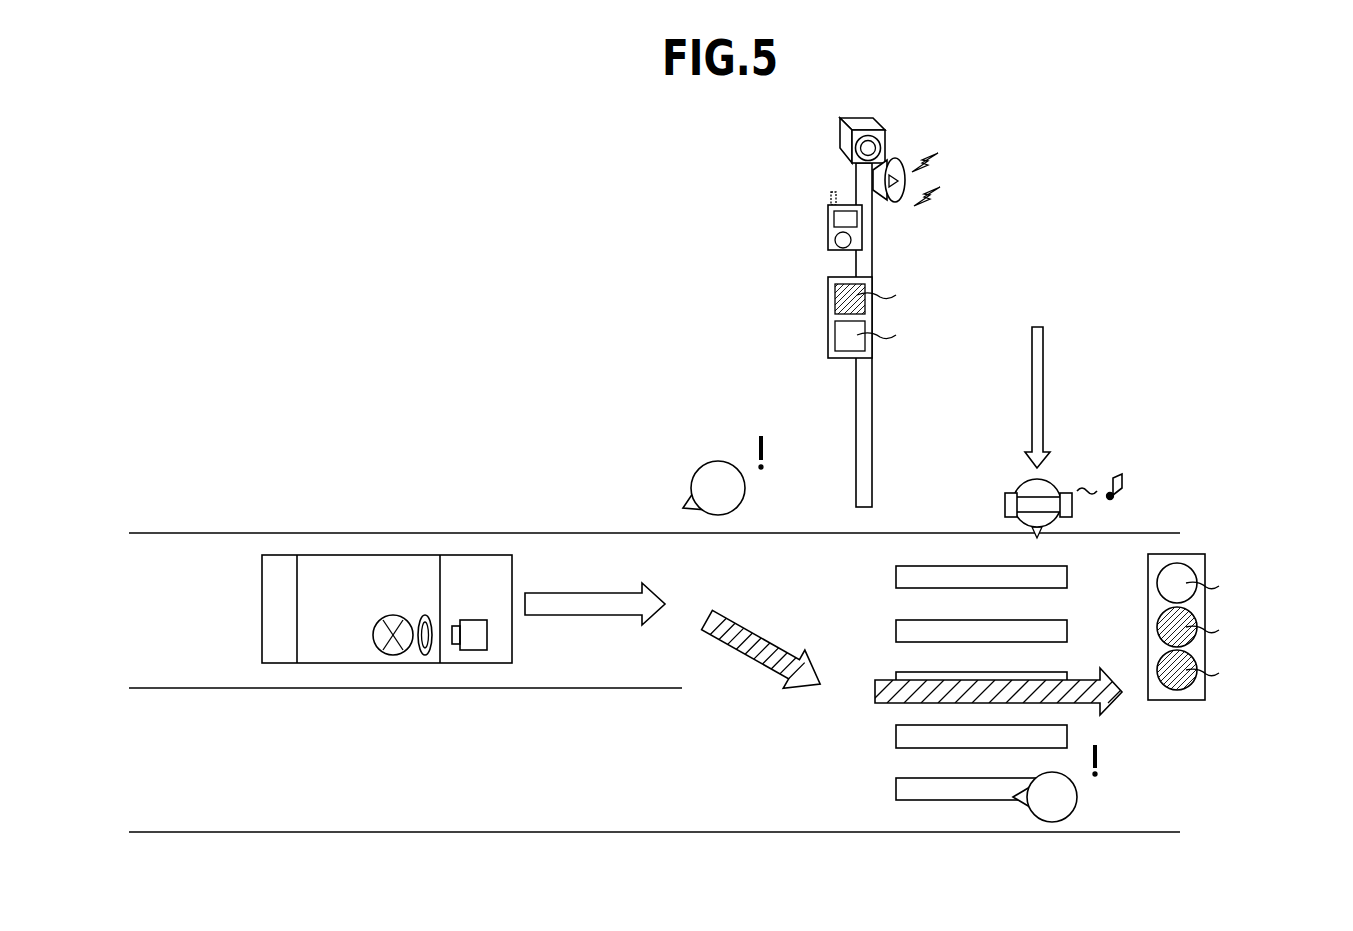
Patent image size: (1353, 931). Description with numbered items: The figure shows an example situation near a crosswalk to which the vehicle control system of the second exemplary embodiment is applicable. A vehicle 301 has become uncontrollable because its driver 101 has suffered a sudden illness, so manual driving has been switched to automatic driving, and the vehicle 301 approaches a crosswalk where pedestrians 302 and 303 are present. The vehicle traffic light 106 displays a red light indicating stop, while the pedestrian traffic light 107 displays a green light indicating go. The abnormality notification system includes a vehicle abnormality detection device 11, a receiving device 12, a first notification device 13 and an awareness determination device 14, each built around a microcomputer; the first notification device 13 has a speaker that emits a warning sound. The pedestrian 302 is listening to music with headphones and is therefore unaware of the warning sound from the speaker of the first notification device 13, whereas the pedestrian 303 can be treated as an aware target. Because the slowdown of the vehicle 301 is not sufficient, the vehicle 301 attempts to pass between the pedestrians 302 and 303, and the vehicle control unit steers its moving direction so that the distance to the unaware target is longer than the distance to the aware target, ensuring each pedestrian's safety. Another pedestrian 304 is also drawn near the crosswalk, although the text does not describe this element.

The awareness determination device 14 is at (860, 126).
The first notification device 13 is at (896, 158).
The receiving device 12 is at (828, 224).
The pedestrian traffic light 107 is at (828, 318).
The pedestrian 304 is at (745, 488).
The pedestrian 302 is at (1010, 493).
The vehicle 301 is at (428, 576).
The driver 101 is at (393, 615).
The vehicle abnormality detection device 11 is at (473, 620).
The pedestrian 303 is at (1077, 804).
The vehicle traffic light 106 is at (1176, 700).